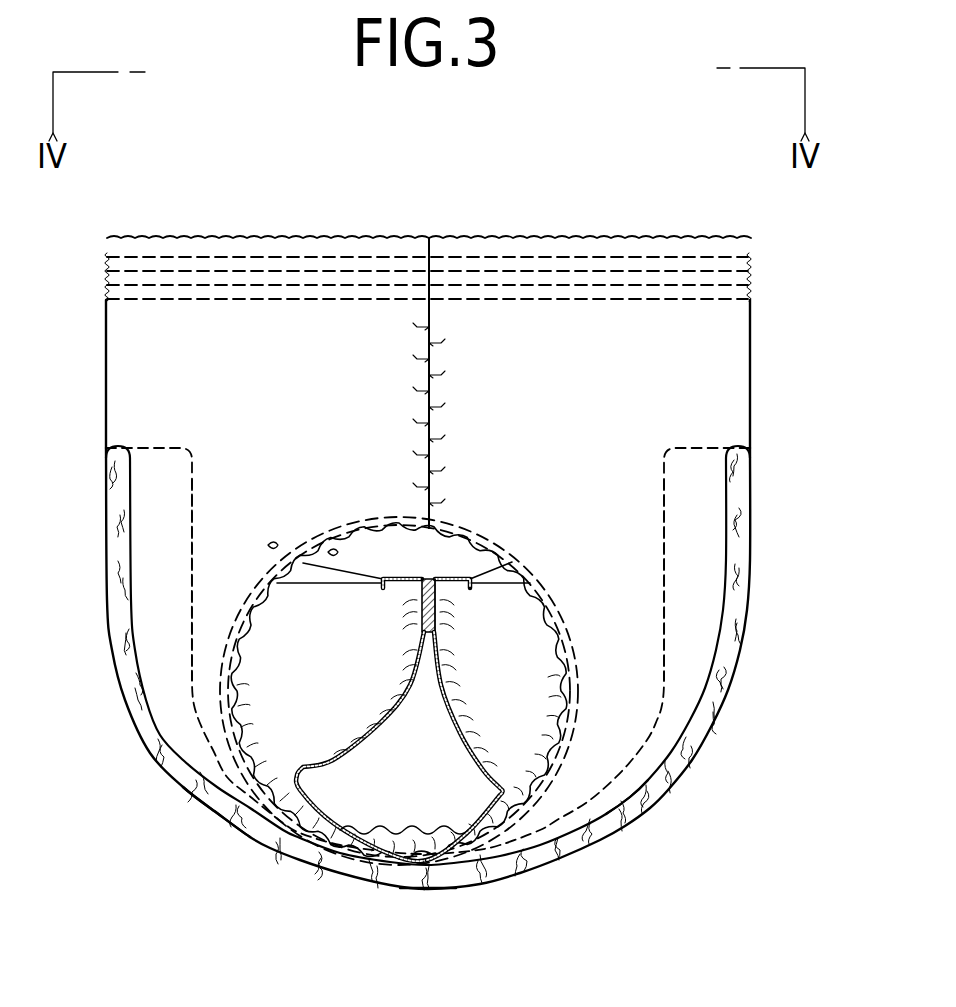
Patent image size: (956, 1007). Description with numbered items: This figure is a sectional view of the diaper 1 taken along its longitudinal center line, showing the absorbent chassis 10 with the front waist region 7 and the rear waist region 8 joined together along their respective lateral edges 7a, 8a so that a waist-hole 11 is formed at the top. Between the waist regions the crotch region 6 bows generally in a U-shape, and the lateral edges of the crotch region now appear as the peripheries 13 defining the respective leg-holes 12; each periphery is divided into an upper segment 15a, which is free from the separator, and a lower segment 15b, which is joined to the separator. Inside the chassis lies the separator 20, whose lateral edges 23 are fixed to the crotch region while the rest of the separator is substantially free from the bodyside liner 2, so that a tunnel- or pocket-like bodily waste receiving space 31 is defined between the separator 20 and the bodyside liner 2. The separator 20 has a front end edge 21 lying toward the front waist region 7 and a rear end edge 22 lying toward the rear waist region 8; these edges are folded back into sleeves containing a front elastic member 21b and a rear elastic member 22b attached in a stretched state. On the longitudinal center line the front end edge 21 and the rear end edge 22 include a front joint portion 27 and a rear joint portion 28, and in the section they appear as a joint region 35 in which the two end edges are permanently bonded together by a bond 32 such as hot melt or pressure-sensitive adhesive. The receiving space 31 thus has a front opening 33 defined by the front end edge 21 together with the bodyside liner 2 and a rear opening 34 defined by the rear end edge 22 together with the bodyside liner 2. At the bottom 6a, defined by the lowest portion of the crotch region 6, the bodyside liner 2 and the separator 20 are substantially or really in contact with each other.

The diaper 1 is at (452, 497).
The bodyside liner 2 is at (728, 527).
The crotch region 6 is at (218, 820).
The bottom 6a is at (418, 890).
The front waist region 7 is at (120, 353).
The lateral edges of front waist region 7a is at (428, 393).
The rear waist region 8 is at (750, 335).
The lateral edges of rear waist region 8a is at (437, 360).
The absorbent chassis 10 is at (428, 229).
The waist-hole 11 is at (170, 248).
The leg-holes 12 is at (372, 545).
The peripheries 13 is at (448, 526).
The upper segment 15a is at (328, 568).
The lower segment 15b is at (237, 617).
The separator 20 is at (413, 703).
The front end edge 21 is at (316, 578).
The front elastic member 21b is at (420, 603).
The rear end edge 22 is at (508, 566).
The rear elastic member 22b is at (548, 596).
The lateral edges of separator 23 is at (510, 823).
The front joint portion 27 is at (421, 624).
The rear joint portion 28 is at (436, 625).
The bodily waste receiving space 31 is at (583, 773).
The bond 32 is at (440, 663).
The front opening 33 is at (230, 570).
The rear opening 34 is at (627, 570).
The joint region 35 is at (413, 600).